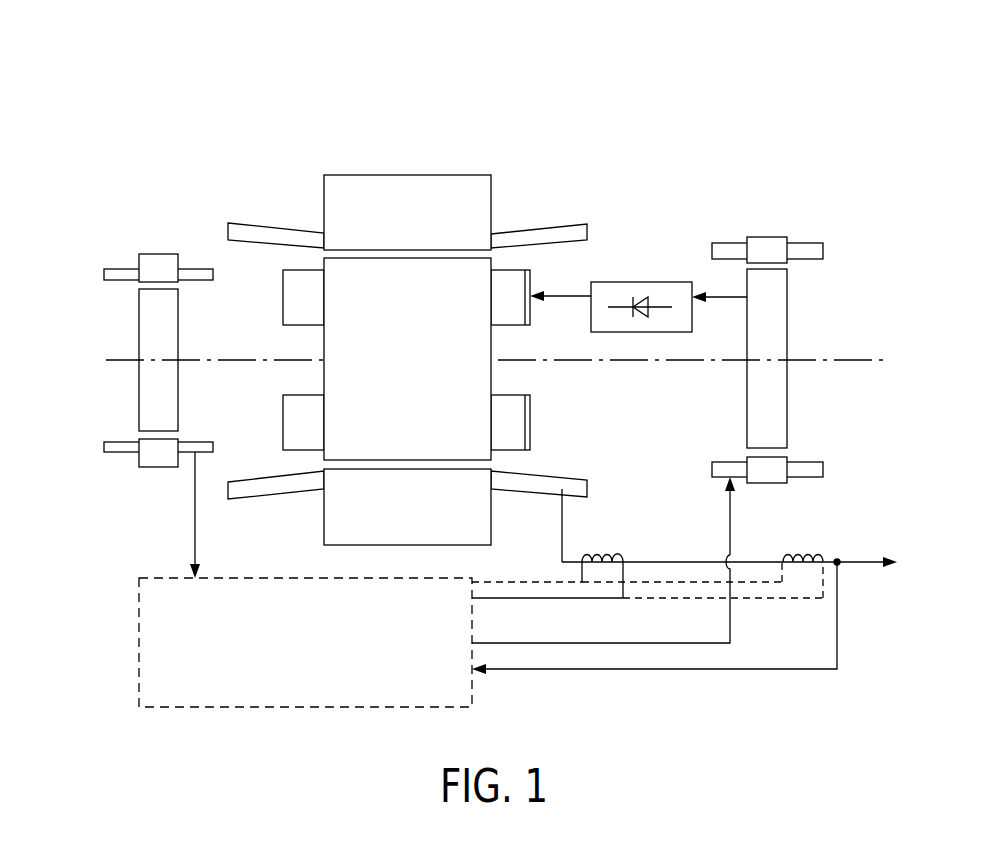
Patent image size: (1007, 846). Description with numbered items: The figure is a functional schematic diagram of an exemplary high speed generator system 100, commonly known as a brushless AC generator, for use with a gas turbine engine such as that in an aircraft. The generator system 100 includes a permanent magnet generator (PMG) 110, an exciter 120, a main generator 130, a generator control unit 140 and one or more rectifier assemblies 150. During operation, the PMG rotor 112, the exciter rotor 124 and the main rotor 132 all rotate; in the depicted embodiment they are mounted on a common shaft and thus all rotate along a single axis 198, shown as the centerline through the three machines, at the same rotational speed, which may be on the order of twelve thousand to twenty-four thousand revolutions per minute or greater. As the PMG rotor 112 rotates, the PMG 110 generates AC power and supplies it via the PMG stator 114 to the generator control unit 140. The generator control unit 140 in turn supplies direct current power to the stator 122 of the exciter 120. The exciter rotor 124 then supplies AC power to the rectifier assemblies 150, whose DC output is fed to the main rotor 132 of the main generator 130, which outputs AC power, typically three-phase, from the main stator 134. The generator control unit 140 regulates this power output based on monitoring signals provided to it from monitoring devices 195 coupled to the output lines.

The high speed generator system 100 is at (666, 162).
The permanent magnet generator (PMG) 110 is at (155, 100).
The PMG rotor 112 is at (139, 328).
The PMG stator 114 is at (104, 274).
The exciter 120 is at (800, 186).
The exciter stator 122 is at (823, 470).
The exciter rotor 124 is at (787, 298).
The main generator 130 is at (398, 124).
The main rotor 132 is at (497, 350).
The main stator 134 is at (492, 521).
The generator control unit 140 is at (150, 575).
The rectifier assemblies 150 is at (652, 332).
The monitoring devices 195 is at (582, 578).
The single axis 198 is at (882, 358).